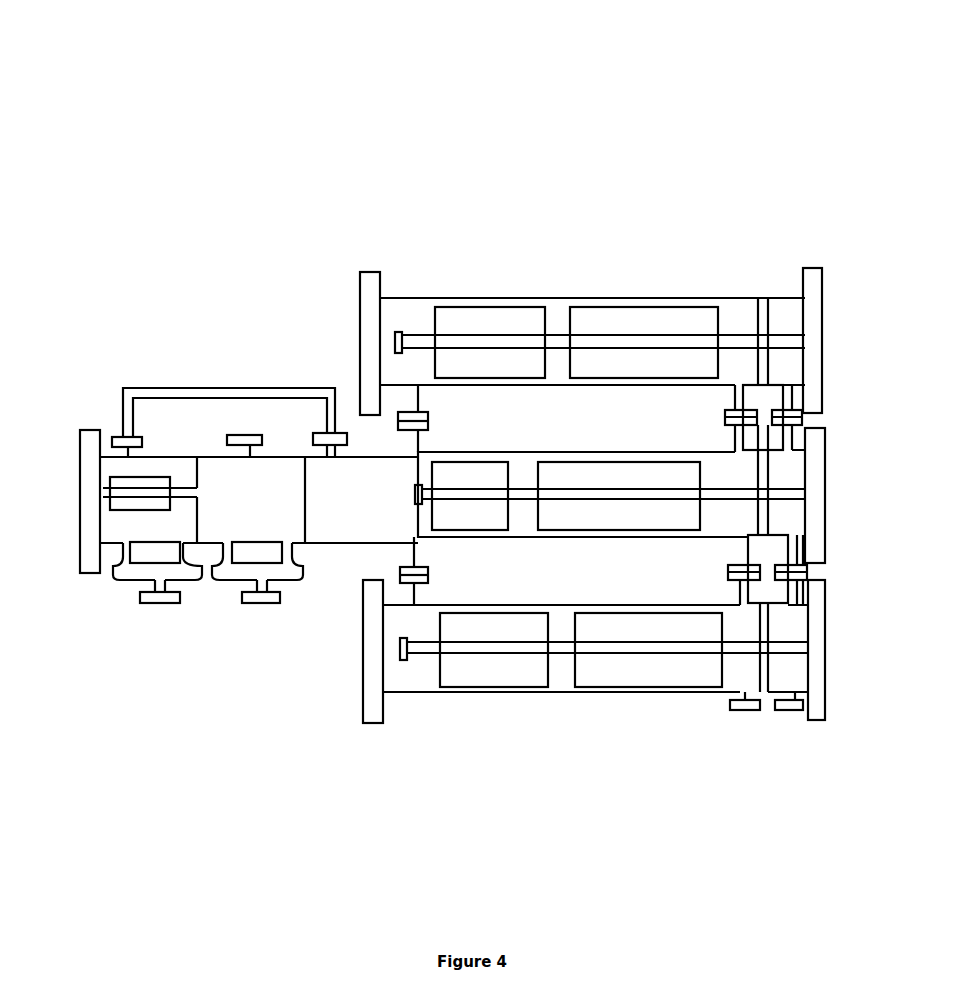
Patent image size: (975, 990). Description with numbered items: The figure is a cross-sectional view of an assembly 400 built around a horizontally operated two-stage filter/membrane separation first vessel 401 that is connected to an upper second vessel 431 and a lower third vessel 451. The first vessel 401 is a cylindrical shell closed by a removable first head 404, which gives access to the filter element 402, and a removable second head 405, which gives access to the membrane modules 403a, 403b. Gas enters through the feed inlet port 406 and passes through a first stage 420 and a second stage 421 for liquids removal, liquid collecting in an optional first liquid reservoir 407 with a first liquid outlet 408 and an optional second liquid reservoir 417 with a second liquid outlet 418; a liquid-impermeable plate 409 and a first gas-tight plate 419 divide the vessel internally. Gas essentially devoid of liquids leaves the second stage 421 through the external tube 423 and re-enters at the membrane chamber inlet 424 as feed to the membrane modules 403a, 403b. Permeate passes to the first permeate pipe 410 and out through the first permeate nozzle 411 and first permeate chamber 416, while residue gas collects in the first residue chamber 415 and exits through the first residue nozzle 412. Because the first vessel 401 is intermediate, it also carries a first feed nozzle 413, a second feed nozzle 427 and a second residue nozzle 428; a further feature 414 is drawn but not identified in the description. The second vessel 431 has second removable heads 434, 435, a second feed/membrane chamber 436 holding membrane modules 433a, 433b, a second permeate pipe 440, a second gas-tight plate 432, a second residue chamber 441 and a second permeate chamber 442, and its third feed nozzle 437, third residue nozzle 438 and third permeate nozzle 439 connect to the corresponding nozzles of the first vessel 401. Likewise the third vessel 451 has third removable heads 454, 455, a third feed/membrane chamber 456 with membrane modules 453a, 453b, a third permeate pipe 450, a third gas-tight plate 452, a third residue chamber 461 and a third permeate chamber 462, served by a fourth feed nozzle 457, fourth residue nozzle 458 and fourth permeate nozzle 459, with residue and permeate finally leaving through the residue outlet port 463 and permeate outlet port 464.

The assembly 400 is at (520, 44).
The first vessel 401 is at (542, 540).
The filter element 402 is at (139, 478).
The membrane module 403a is at (446, 470).
The membrane module 403b is at (571, 473).
The first head 404 is at (78, 432).
The second head 405 is at (828, 437).
The feed inlet port 406 is at (237, 434).
The first liquid reservoir 407 is at (222, 583).
The first liquid outlet 408 is at (263, 604).
The liquid-impermeable plate 409 is at (306, 544).
The first permeate pipe 410 is at (499, 492).
The first permeate nozzle 411 is at (790, 544).
The first residue nozzle 412 is at (735, 546).
The first feed nozzle 413 is at (417, 554).
The housing wall 414 is at (338, 534).
The first residue chamber 415 is at (708, 463).
The first permeate chamber 416 is at (790, 472).
The second liquid reservoir 417 is at (113, 582).
The second liquid outlet 418 is at (160, 604).
The first gas-tight plate 419 is at (770, 519).
The first stage 420 is at (230, 531).
The second stage 421 is at (113, 533).
The external tube 423 is at (157, 377).
The membrane chamber inlet 424 is at (347, 438).
The second feed nozzle 427 is at (419, 438).
The second residue nozzle 428 is at (733, 434).
The second vessel 431 is at (566, 387).
The second gas-tight plate 432 is at (761, 296).
The membrane module 433a is at (443, 313).
The membrane module 433b is at (578, 313).
The second removable head 434 is at (358, 271).
The second removable head 435 is at (823, 268).
The second feed/membrane chamber 436 is at (388, 307).
The third feed nozzle 437 is at (422, 403).
The third residue nozzle 438 is at (733, 400).
The third permeate nozzle 439 is at (781, 401).
The second permeate pipe 440 is at (486, 340).
The second residue chamber 441 is at (720, 305).
The second permeate chamber 442 is at (773, 297).
The third permeate pipe 450 is at (516, 651).
The third vessel 451 is at (567, 694).
The third gas-tight plate 452 is at (765, 692).
The membrane module 453a is at (458, 622).
The membrane module 453b is at (591, 621).
The third removable head 454 is at (365, 724).
The third removable head 455 is at (826, 720).
The third feed/membrane chamber 456 is at (428, 686).
The fourth feed nozzle 457 is at (417, 596).
The fourth residue nozzle 458 is at (738, 588).
The fourth permeate nozzle 459 is at (772, 589).
The third residue chamber 461 is at (732, 615).
The third permeate chamber 462 is at (798, 623).
The residue outlet port 463 is at (742, 711).
The permeate outlet port 464 is at (792, 712).